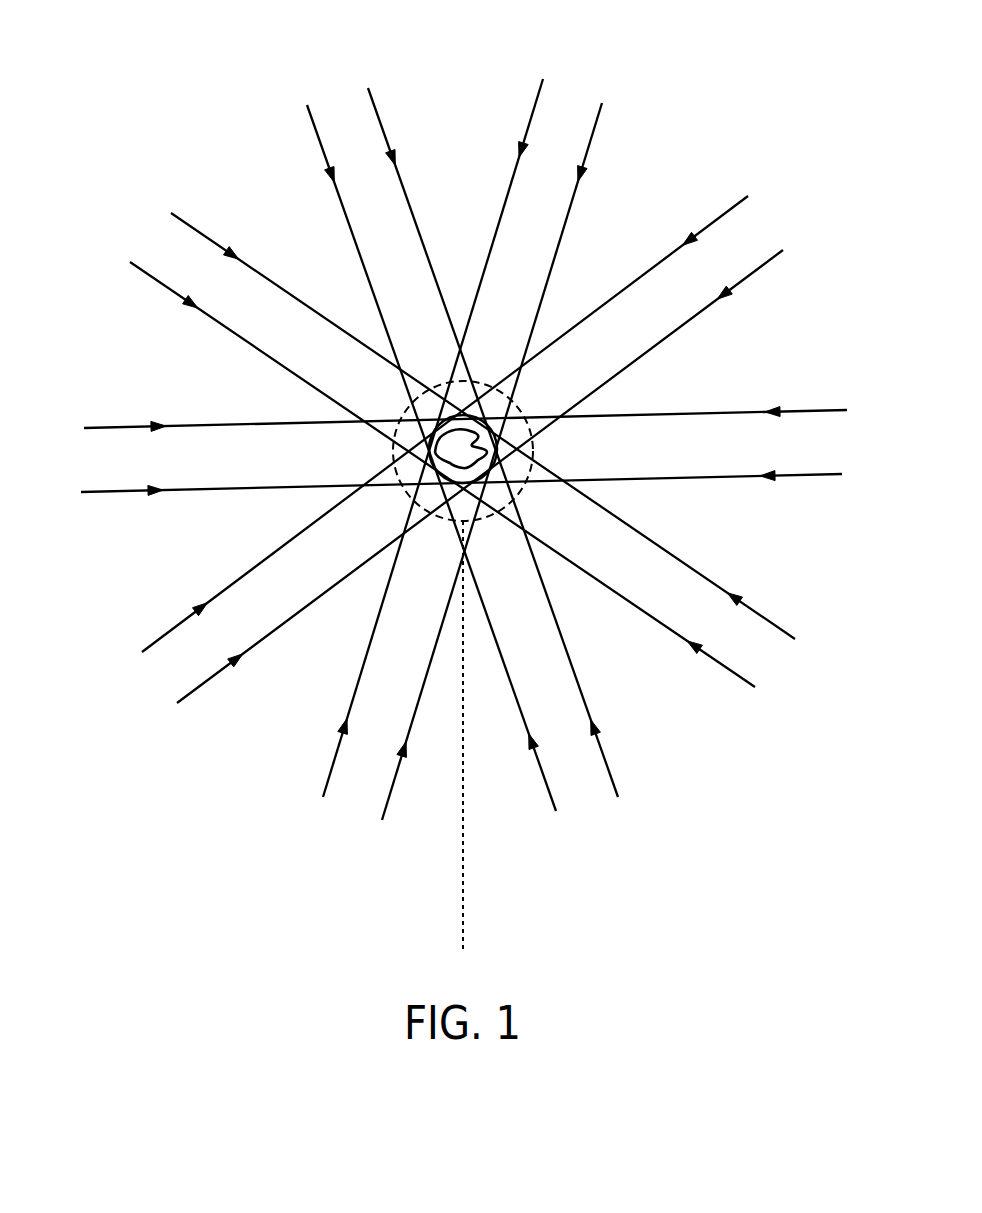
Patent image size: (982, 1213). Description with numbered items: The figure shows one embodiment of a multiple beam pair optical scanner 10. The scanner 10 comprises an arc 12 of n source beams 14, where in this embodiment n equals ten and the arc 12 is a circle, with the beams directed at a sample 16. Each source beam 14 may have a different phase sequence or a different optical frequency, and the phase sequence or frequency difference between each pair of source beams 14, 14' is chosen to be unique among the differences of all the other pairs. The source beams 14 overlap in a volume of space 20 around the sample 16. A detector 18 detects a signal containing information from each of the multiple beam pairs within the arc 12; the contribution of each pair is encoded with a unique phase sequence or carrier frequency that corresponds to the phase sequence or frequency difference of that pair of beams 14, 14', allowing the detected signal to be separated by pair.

The multiple beam pair optical scanner 10 is at (451, 56).
The arc 12 is at (486, 482).
The source beam 14 is at (438, 449).
The source beam 14' is at (625, 447).
The sample 16 is at (470, 456).
The detector 18 is at (522, 406).
The volume of space 20 is at (465, 393).